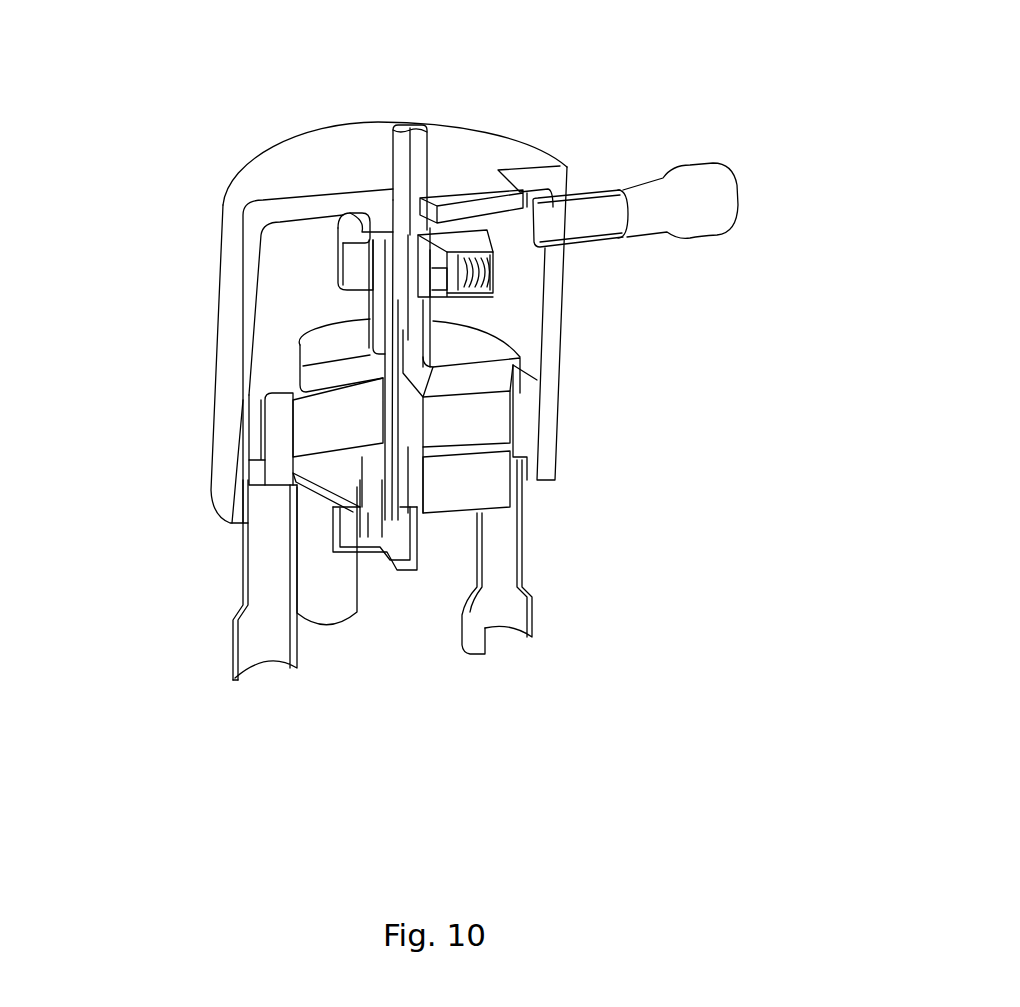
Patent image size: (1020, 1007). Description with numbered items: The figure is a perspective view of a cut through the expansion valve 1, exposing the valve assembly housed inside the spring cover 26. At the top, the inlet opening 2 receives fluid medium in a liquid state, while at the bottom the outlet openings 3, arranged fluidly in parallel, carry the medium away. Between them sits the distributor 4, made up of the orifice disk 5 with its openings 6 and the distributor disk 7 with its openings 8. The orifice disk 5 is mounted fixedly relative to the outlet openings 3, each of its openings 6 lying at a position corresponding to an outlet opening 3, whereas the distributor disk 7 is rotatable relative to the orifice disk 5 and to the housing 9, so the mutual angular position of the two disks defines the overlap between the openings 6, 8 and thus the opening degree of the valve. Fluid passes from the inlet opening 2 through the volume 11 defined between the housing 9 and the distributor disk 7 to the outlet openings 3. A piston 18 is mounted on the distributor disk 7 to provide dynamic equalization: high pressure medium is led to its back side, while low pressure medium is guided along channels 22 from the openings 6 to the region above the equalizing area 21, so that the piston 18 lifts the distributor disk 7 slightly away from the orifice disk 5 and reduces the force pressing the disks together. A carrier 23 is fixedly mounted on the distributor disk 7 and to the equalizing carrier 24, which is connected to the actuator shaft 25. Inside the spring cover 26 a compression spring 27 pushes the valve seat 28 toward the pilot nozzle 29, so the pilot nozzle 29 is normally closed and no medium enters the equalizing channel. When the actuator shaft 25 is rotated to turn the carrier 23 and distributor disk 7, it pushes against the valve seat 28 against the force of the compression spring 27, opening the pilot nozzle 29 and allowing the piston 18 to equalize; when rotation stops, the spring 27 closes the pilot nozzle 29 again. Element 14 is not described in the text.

The expansion valve 1 is at (658, 50).
The inlet opening 2 is at (579, 206).
The outlet openings 3 is at (327, 630).
The distributor 4 is at (583, 424).
The orifice disk 5 is at (242, 485).
The openings 6 is at (261, 452).
The distributor disk 7 is at (248, 424).
The openings 8 is at (285, 407).
The housing 9 is at (338, 148).
The volume 11 is at (285, 275).
The bracket 14 is at (387, 517).
The piston 18 is at (365, 533).
The equalizing area 21 is at (359, 552).
The channels 22 is at (301, 496).
The carrier 23 is at (307, 377).
The equalizing carrier 24 is at (332, 259).
The actuator shaft 25 is at (413, 162).
The spring cover 26 is at (509, 281).
The compression spring 27 is at (470, 300).
The valve seat 28 is at (491, 301).
The pilot nozzle 29 is at (422, 261).